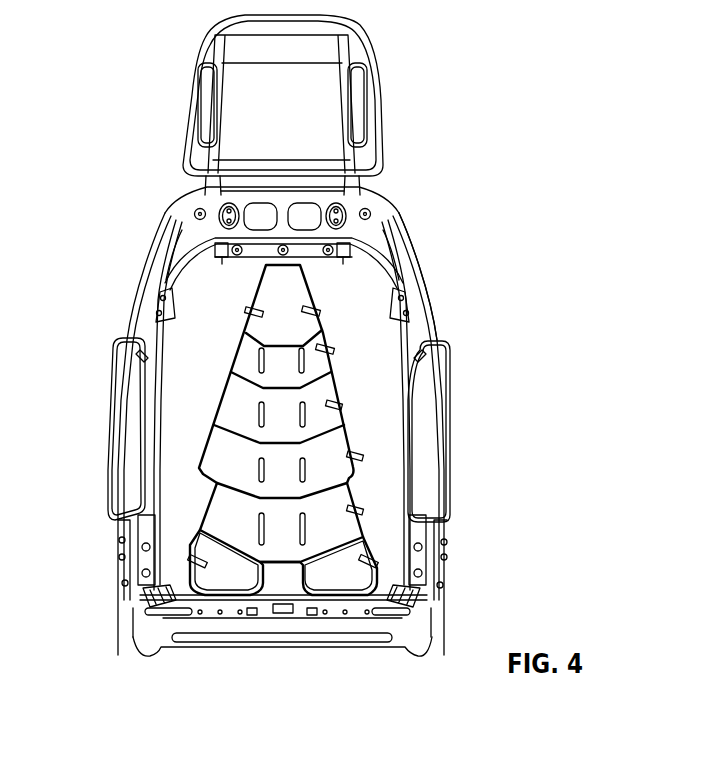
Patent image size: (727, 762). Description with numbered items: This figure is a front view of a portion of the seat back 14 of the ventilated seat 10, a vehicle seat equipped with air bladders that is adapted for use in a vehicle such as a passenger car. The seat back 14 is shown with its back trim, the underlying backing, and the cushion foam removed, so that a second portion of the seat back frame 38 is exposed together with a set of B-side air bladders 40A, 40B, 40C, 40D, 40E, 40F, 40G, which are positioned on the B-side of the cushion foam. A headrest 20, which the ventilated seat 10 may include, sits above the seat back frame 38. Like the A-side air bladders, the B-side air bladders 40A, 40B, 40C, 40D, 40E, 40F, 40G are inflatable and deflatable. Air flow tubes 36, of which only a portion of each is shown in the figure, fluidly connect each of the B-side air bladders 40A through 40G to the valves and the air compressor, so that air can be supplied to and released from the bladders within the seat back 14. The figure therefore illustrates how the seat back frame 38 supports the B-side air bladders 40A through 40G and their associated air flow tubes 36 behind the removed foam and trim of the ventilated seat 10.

The ventilated seat 10 is at (176, 30).
The seat back 14 is at (130, 240).
The headrest 20 is at (343, 33).
The air flow tubes 36 is at (253, 311).
The seat back frame 38 is at (412, 277).
The B-side air bladder 40A is at (287, 295).
The B-side air bladder 40B is at (247, 353).
The B-side air bladder 40C is at (318, 392).
The B-side air bladder 40D is at (225, 458).
The B-side air bladder 40E is at (330, 500).
The B-side air bladder 40F is at (212, 545).
The B-side air bladder 40G is at (347, 558).